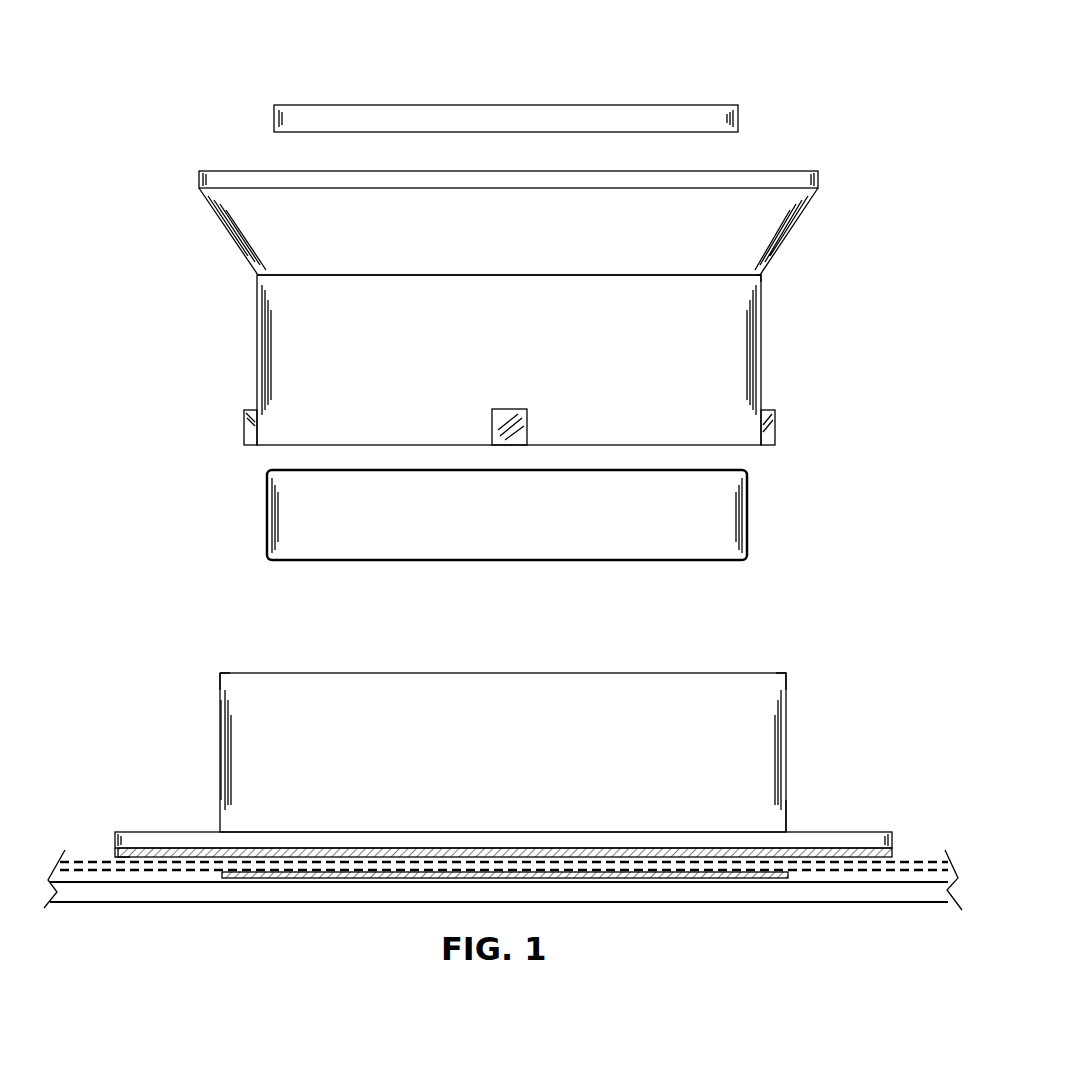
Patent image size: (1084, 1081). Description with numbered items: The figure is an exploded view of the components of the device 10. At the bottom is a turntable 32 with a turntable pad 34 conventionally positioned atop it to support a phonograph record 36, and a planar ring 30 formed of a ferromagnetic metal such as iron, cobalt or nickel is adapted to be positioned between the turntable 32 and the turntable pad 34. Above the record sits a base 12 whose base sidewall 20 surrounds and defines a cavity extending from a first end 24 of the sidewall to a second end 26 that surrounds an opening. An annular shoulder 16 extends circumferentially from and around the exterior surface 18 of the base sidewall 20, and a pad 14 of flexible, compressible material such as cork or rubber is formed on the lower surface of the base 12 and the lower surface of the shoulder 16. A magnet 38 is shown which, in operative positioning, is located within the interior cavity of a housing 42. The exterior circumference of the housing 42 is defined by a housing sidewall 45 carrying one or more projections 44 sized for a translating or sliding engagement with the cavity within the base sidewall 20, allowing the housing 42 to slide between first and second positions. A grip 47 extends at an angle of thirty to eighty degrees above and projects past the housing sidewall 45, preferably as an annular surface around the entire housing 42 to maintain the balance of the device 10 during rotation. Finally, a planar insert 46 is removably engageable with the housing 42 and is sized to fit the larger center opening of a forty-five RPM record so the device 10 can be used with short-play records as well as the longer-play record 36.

The device 10 is at (180, 285).
The base 12 is at (220, 682).
The pad 14 is at (120, 856).
The annular shoulder 16 is at (185, 838).
The exterior surface 18 is at (505, 704).
The base sidewall 20 is at (310, 735).
The first end 24 is at (785, 832).
The second end 26 is at (778, 672).
The planar ring 30 is at (775, 875).
The turntable 32 is at (740, 892).
The turntable pad 34 is at (900, 861).
The phonograph record 36 is at (895, 871).
The magnet 38 is at (688, 543).
The housing 42 is at (761, 276).
The projections 44 is at (773, 420).
The housing sidewall 45 is at (543, 360).
The insert 46 is at (640, 112).
The grip 47 is at (508, 223).